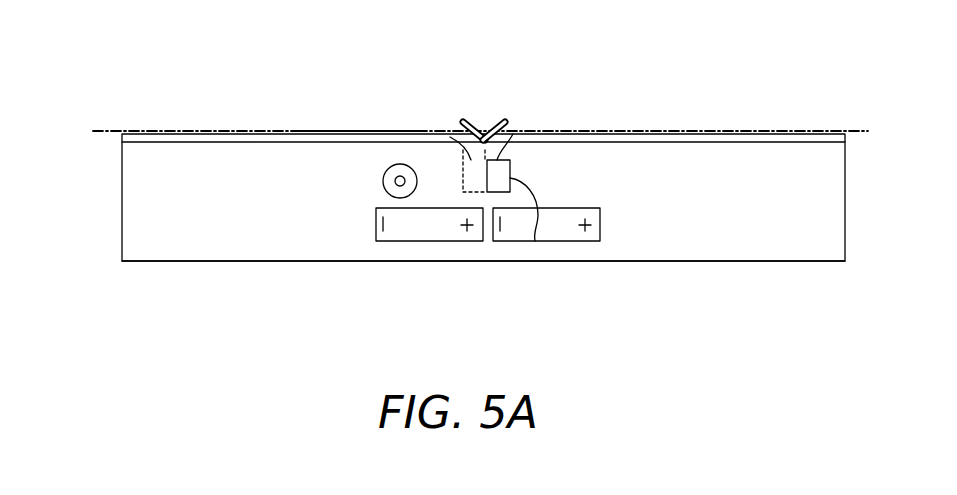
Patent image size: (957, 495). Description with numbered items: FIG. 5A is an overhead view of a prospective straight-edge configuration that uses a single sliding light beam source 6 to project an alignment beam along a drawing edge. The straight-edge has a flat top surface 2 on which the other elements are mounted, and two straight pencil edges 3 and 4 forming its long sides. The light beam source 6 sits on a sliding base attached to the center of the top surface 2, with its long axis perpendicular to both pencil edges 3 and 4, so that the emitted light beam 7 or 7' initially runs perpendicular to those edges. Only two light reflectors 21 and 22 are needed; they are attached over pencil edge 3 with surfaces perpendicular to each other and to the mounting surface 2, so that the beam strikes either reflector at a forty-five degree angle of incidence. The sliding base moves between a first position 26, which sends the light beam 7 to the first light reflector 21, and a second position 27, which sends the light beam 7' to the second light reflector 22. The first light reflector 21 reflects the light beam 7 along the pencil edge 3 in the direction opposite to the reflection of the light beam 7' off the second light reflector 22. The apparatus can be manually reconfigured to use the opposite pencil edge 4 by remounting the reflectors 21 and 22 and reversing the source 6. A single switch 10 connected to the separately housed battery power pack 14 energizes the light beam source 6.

The flat top surface 2 is at (176, 217).
The pencil edge 3 is at (220, 130).
The pencil edge 4 is at (236, 261).
The light beam source 6 is at (535, 241).
The light beam 7 is at (480, 93).
The light beam 7' is at (360, 80).
The switch 10 is at (384, 186).
The battery power pack 14 is at (513, 233).
The first light reflector 21 is at (511, 134).
The second light reflector 22 is at (462, 134).
The first position 26 is at (530, 139).
The second position 27 is at (450, 137).